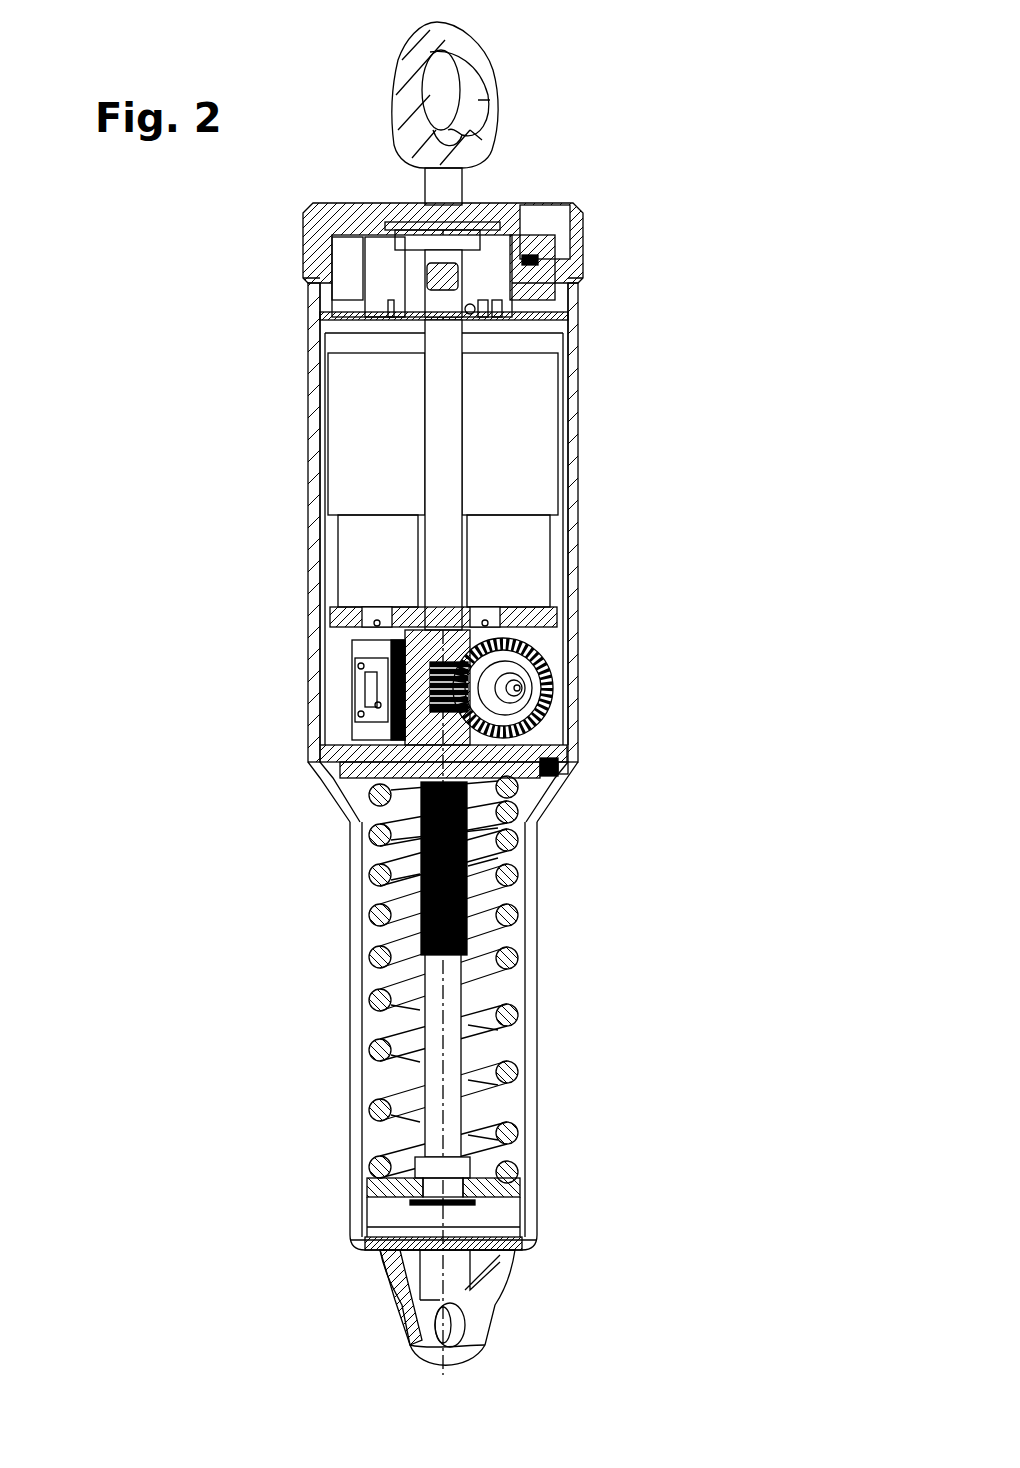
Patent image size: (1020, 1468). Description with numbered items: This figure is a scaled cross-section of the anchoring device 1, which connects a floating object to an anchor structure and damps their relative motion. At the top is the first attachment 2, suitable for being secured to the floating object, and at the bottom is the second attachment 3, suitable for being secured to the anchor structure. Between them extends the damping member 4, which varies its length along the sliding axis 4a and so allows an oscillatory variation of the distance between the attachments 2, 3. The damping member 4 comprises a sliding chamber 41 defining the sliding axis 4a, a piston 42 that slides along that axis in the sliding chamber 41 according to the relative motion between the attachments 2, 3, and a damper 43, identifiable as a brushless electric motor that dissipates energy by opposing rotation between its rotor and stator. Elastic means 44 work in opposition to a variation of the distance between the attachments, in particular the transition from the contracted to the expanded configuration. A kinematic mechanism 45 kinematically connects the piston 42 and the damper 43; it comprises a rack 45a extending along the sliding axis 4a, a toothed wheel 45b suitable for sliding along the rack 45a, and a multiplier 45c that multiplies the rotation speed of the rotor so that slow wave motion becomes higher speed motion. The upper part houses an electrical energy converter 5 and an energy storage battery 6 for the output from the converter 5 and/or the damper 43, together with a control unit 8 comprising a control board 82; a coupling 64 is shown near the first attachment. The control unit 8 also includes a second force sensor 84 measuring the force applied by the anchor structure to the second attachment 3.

The anchoring device 1 is at (765, 1228).
The first attachment 2 is at (358, 50).
The second attachment 3 is at (390, 1342).
The damping member 4 is at (119, 1264).
The sliding axis 4a is at (449, 572).
The electrical energy converter 5 is at (396, 295).
The energy storage battery 6 is at (330, 304).
The control unit 8 is at (617, 283).
The sliding chamber 41 is at (194, 929).
The piston 42 is at (390, 1215).
The damper 43 is at (393, 479).
The elastic means 44 is at (382, 1072).
The kinematic mechanism 45 is at (658, 790).
The rack 45a is at (473, 965).
The toothed wheel 45b is at (433, 648).
The multiplier 45c is at (548, 655).
The coupling 64 is at (458, 278).
The control board 82 is at (560, 333).
The second force sensor 84 is at (490, 1240).